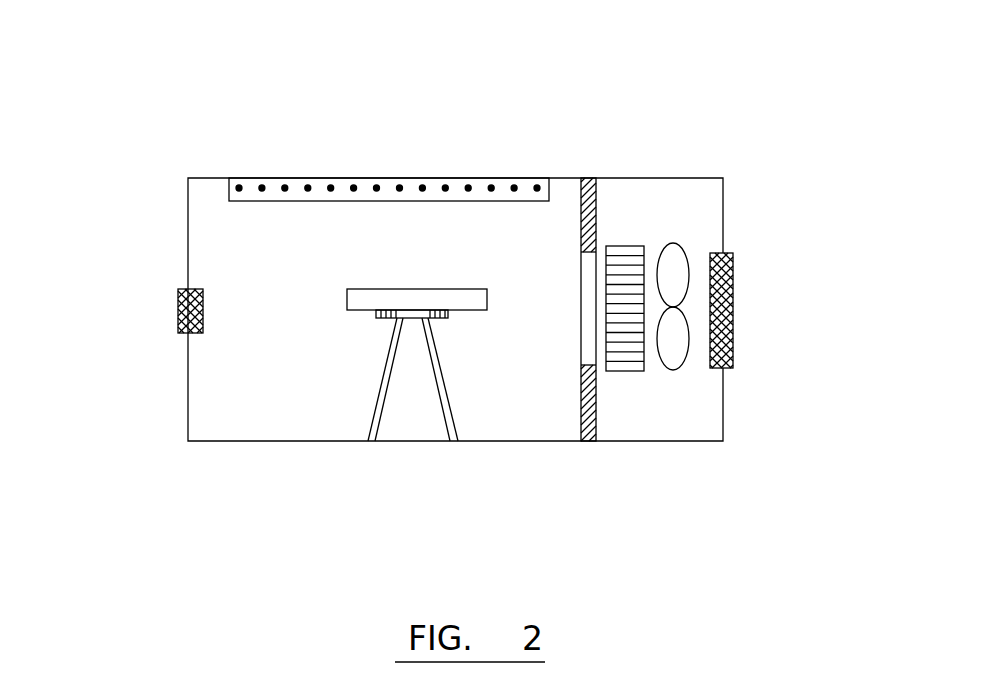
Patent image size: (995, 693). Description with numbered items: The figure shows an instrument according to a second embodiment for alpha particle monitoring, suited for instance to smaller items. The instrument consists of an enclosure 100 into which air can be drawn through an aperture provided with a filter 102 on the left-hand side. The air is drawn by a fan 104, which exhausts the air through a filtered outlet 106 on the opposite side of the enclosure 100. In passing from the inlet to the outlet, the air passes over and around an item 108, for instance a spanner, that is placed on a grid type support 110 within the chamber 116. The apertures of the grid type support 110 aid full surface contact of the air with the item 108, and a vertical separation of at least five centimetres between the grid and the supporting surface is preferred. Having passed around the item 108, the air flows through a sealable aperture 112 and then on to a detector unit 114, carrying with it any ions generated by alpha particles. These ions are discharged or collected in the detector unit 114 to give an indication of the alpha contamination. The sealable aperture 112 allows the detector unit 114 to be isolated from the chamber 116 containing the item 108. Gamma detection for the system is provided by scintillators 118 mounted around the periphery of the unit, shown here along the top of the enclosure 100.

The enclosure 100 is at (320, 178).
The filter 102 is at (178, 295).
The fan 104 is at (670, 262).
The filtered outlet 106 is at (730, 360).
The item 108 is at (450, 297).
The grid type support 110 is at (447, 318).
The sealable aperture 112 is at (587, 295).
The detector unit 114 is at (630, 358).
The chamber 116 is at (263, 388).
The scintillators 118 is at (390, 189).